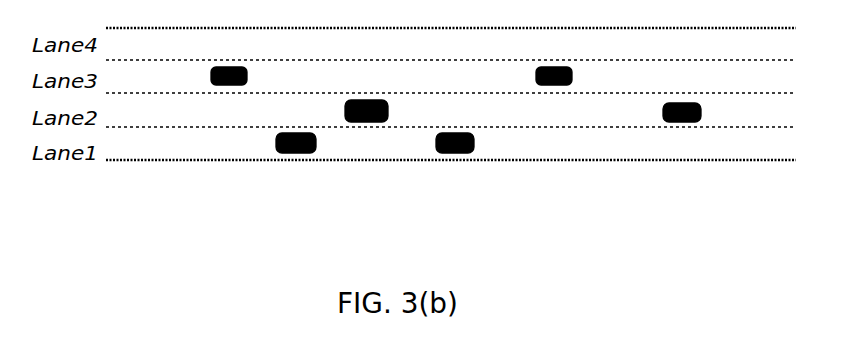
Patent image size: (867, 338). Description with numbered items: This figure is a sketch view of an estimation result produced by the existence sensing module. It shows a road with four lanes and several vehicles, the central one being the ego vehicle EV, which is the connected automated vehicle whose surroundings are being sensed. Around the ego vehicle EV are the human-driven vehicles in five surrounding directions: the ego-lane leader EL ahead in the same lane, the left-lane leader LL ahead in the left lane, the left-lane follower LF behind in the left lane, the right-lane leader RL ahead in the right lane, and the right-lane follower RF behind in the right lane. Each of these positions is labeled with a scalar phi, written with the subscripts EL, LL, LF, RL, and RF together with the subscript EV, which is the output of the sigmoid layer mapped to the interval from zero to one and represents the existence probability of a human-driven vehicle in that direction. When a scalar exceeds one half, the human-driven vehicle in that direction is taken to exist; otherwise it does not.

The ego vehicle EV is at (359, 97).
The left-lane follower LF is at (211, 60).
The left-lane leader LL is at (547, 60).
The right-lane follower RF is at (282, 162).
The right-lane leader RL is at (474, 162).
The ego-lane leader EL is at (722, 108).